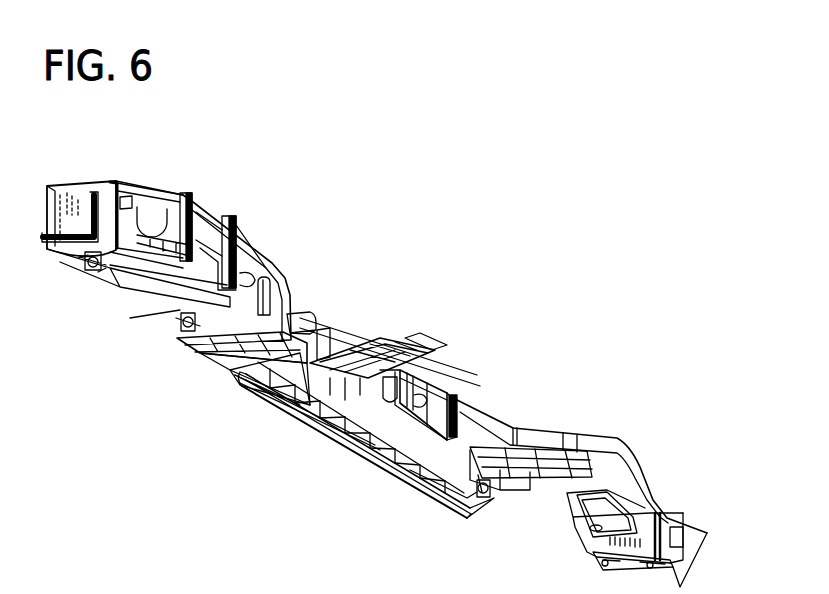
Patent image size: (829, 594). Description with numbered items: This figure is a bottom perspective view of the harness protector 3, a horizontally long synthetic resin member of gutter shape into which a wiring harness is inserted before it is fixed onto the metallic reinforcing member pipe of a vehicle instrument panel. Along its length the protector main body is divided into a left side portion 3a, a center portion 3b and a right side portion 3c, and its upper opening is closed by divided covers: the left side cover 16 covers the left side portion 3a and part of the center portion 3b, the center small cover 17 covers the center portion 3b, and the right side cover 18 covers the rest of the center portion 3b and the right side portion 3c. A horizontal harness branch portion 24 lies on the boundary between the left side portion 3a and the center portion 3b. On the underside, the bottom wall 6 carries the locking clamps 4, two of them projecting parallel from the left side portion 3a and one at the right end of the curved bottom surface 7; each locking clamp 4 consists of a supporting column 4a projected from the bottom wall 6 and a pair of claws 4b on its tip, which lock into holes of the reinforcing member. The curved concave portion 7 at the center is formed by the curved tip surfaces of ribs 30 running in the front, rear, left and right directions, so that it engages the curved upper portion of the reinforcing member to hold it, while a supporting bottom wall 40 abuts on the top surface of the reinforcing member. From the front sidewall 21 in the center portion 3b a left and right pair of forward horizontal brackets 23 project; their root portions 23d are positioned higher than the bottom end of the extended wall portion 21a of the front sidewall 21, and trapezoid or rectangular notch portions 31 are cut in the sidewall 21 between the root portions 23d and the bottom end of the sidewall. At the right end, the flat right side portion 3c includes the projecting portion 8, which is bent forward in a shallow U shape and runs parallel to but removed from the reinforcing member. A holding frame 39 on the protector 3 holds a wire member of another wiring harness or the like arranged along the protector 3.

The harness protector 3 is at (414, 252).
The left side portion 3a is at (247, 257).
The center portion 3b is at (440, 387).
The right side portion 3c is at (657, 475).
The locking clamp 4 is at (93, 270).
The supporting column 4a is at (80, 263).
The claws 4b is at (99, 273).
The bottom wall 6 is at (210, 350).
The curved concave portion 7 is at (353, 440).
The projecting portion 8 is at (640, 498).
The left side cover 16 is at (161, 201).
The center small cover 17 is at (363, 340).
The right side cover 18 is at (603, 438).
The front sidewall 21 is at (460, 433).
The extended wall portion 21a is at (433, 487).
The bracket 23 is at (427, 360).
The root portions 23d is at (322, 360).
The horizontal harness branch portion 24 is at (313, 315).
The rib 30 is at (280, 398).
The notch portions 31 is at (337, 408).
The holding frame 39 is at (198, 200).
The supporting bottom wall 40 is at (228, 357).